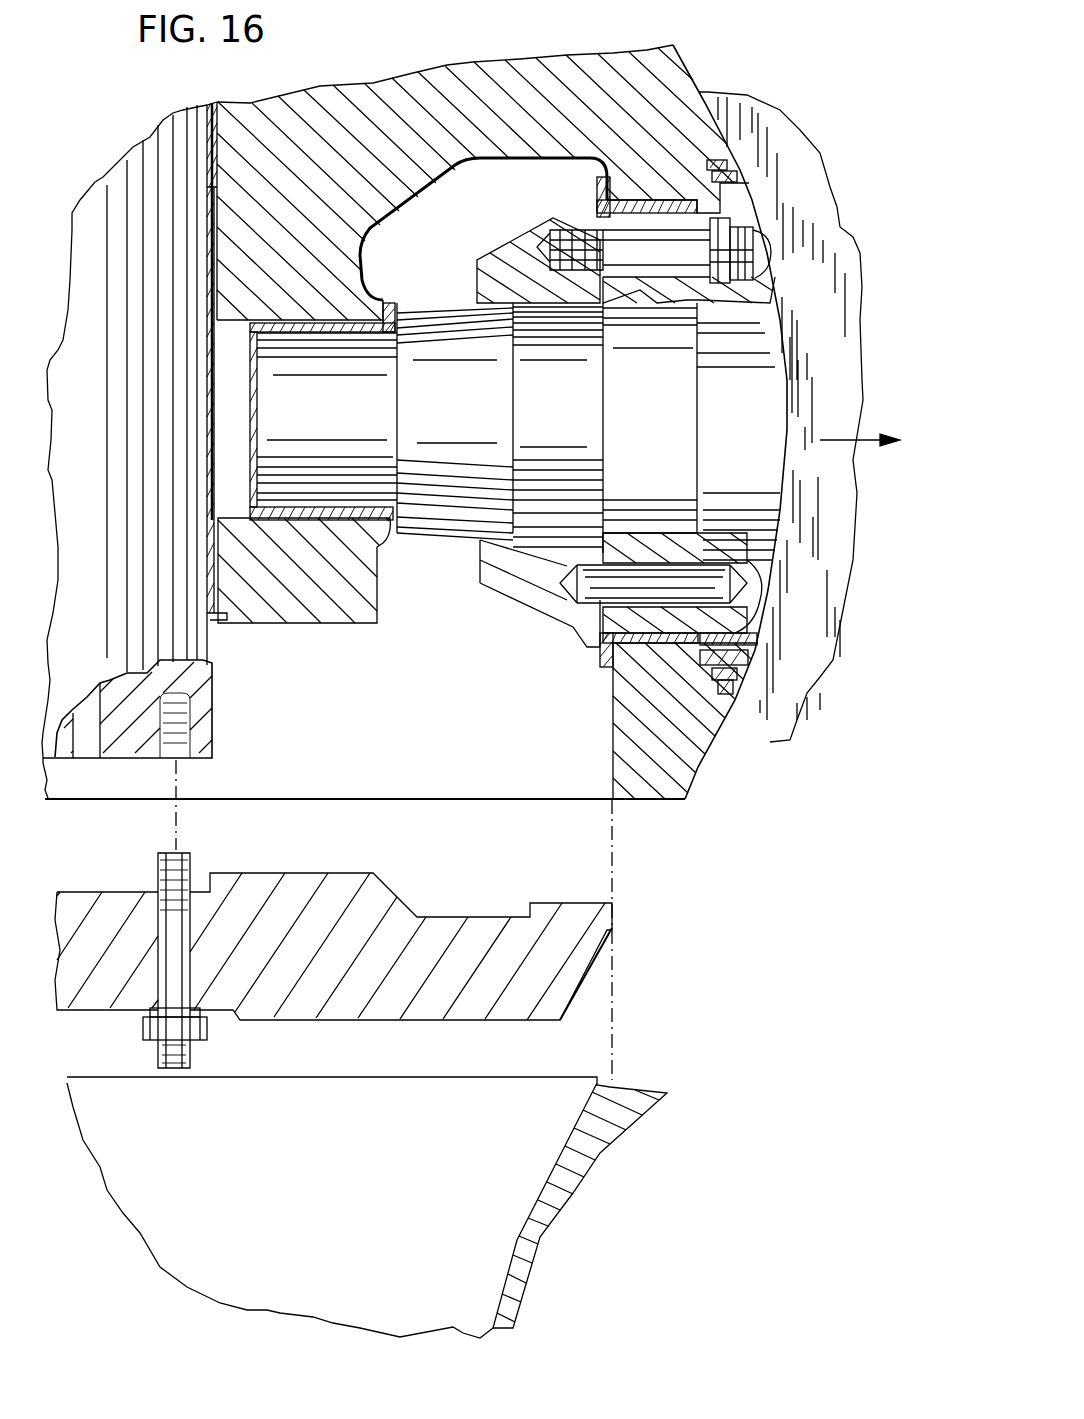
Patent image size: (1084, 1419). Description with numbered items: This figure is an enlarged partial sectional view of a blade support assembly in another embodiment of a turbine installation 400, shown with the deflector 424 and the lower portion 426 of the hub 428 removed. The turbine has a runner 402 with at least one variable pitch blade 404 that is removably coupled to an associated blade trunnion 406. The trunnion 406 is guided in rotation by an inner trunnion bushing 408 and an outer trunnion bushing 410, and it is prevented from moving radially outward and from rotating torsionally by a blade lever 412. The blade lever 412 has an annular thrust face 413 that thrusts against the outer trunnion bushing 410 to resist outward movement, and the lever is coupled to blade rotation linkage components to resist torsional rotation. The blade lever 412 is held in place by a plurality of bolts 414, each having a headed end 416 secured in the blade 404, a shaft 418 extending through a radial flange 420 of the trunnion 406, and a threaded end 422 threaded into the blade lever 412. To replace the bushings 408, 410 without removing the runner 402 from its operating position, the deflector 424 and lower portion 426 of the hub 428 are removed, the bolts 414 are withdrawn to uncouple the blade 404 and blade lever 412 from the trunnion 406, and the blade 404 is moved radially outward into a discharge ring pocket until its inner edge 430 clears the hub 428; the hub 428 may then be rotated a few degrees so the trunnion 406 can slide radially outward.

The turbine installation 400 is at (447, 60).
The runner 402 is at (645, 825).
The blade 404 is at (757, 97).
The blade trunnion 406 is at (427, 533).
The inner trunnion bushing 408 is at (357, 625).
The outer trunnion bushing 410 is at (655, 645).
The blade lever 412 is at (505, 600).
The annular thrust face 413 is at (595, 170).
The bolts 414 is at (580, 232).
The headed ends 416 is at (752, 267).
The shafts 418 is at (670, 278).
The radial flange 420 is at (638, 716).
The threaded ends 422 is at (547, 221).
The deflector 424 is at (617, 1167).
The lower portion of hub 426 is at (575, 1000).
The hub 428 is at (697, 75).
The inner edge 430 is at (697, 392).